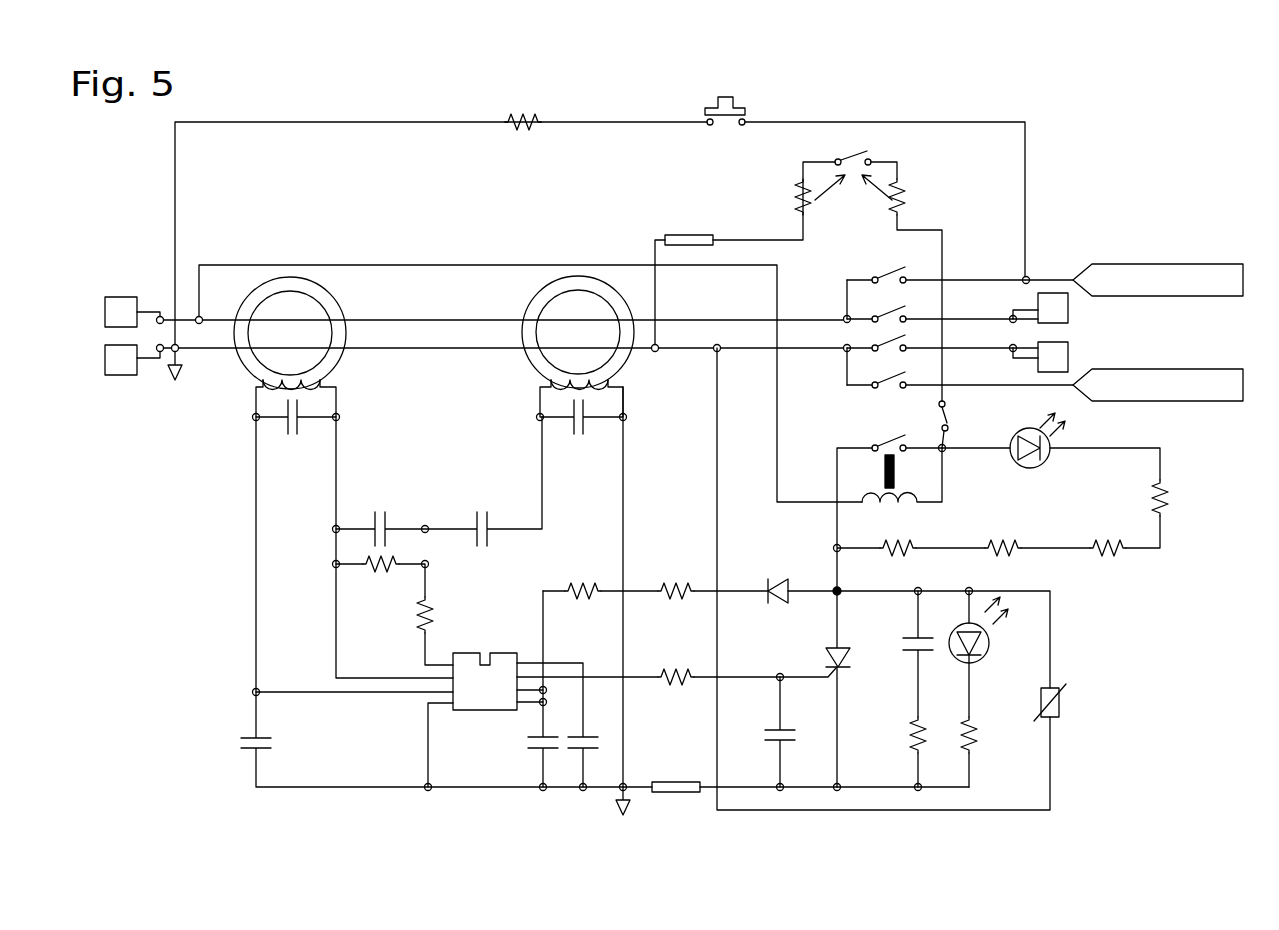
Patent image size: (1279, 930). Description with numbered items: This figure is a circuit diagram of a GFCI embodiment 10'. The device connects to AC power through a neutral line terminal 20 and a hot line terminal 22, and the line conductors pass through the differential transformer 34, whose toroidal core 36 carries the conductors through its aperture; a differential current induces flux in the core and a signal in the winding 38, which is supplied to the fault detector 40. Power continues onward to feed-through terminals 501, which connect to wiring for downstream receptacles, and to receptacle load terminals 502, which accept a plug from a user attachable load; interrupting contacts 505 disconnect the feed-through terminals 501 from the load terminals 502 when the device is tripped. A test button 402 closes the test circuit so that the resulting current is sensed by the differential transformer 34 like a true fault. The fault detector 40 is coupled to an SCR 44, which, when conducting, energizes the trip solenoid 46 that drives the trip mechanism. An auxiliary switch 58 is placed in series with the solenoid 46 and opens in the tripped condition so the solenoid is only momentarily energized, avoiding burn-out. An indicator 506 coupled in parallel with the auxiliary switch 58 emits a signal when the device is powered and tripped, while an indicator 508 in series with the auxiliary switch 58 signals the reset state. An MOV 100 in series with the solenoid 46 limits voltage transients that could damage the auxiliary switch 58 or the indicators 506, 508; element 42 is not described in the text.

The GFCI embodiment 10' is at (508, 96).
The test button 402 is at (748, 104).
The hot line terminal 22 is at (105, 318).
The neutral line terminal 20 is at (105, 368).
The differential transformer 34 is at (341, 295).
The toroidal core 36 is at (338, 345).
The winding 38 is at (316, 375).
The interrupting contacts 505 is at (889, 256).
The feed-through terminals 501 is at (1068, 326).
The receptacle load terminals 502 is at (1195, 297).
The indicator 506 is at (1013, 438).
The auxiliary switch 58 is at (896, 441).
The trip solenoid 46 is at (907, 506).
The resistor network 42 is at (579, 569).
The fault detector 40 is at (468, 652).
The SCR 44 is at (845, 656).
The indicator 508 is at (986, 660).
The MOV 100 is at (1061, 706).